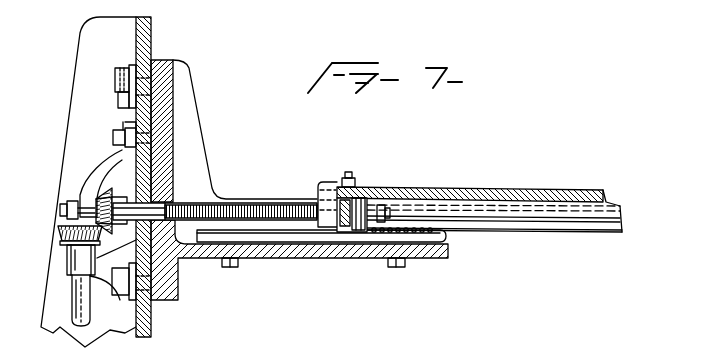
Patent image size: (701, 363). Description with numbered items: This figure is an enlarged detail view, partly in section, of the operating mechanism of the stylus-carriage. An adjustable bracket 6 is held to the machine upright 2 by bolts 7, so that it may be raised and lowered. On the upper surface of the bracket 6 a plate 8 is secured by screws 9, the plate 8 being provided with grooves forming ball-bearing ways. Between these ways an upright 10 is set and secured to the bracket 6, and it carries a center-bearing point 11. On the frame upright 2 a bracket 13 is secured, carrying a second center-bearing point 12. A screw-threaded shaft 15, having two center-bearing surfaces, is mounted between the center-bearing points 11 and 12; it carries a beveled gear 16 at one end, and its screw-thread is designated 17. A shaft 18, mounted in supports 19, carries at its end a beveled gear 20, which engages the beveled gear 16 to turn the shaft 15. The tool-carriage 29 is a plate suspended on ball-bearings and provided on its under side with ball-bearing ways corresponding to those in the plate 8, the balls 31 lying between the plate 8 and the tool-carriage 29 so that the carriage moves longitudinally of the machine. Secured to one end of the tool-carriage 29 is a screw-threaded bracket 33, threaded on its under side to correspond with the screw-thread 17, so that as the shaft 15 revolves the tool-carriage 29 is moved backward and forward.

The upright 2 is at (154, 38).
The adjustable bracket 6 is at (193, 128).
The bolt 7 is at (116, 78).
The plate 8 is at (448, 240).
The screw 9 is at (313, 277).
The upright 10 is at (364, 197).
The center-bearing point 11 is at (388, 207).
The center-bearing point 12 is at (61, 210).
The bracket 13 is at (104, 158).
The screw-threaded shaft 15 is at (178, 202).
The beveled gear 16 is at (113, 199).
The screw-thread 17 is at (258, 204).
The shaft 18 is at (70, 307).
The support 19 is at (67, 264).
The beveled gear 20 is at (59, 233).
The tool-carriage 29 is at (494, 190).
The ball 31 is at (431, 230).
The screw-threaded bracket 33 is at (323, 183).